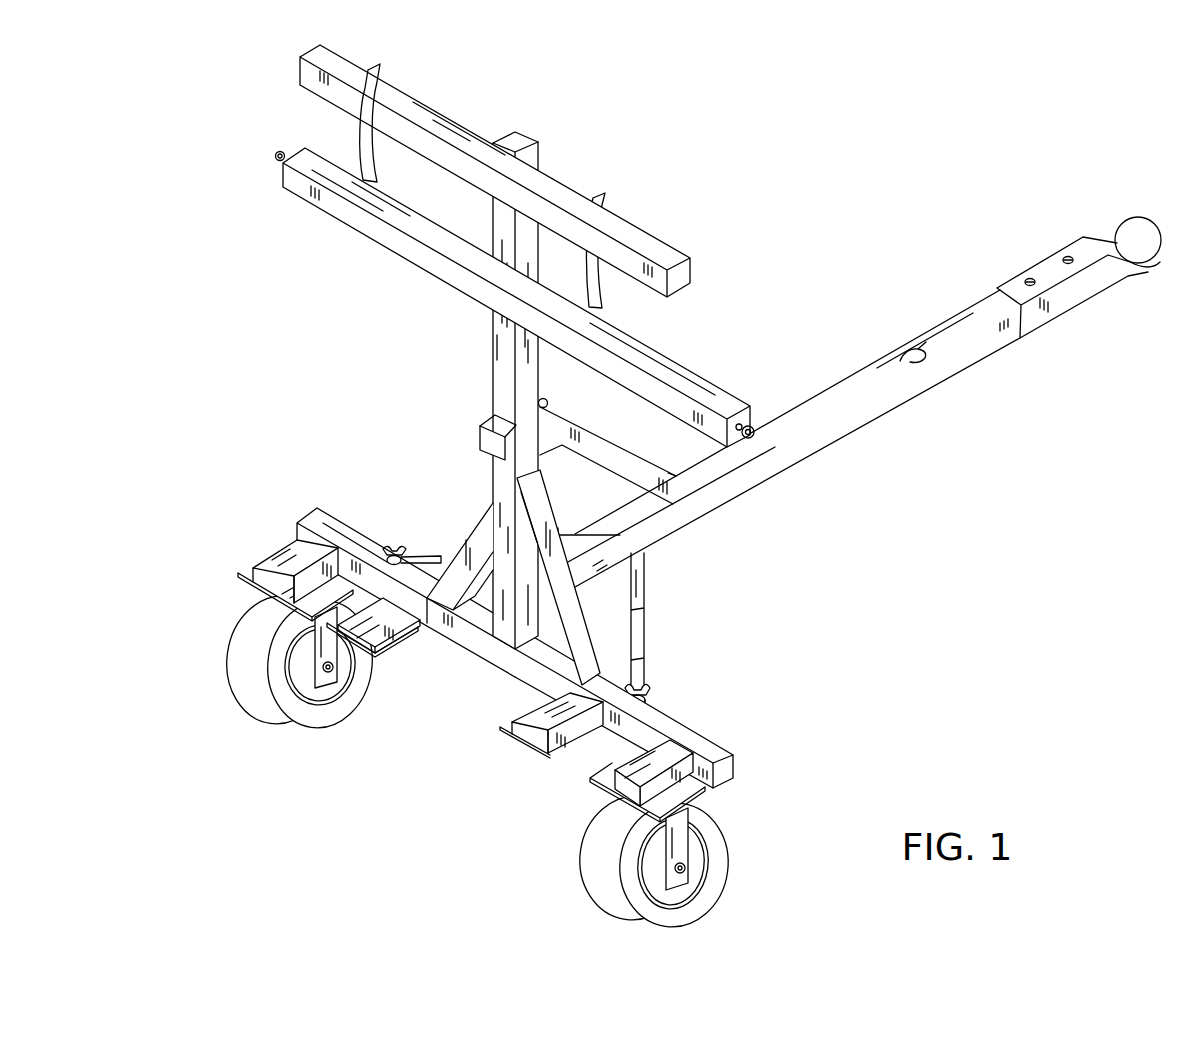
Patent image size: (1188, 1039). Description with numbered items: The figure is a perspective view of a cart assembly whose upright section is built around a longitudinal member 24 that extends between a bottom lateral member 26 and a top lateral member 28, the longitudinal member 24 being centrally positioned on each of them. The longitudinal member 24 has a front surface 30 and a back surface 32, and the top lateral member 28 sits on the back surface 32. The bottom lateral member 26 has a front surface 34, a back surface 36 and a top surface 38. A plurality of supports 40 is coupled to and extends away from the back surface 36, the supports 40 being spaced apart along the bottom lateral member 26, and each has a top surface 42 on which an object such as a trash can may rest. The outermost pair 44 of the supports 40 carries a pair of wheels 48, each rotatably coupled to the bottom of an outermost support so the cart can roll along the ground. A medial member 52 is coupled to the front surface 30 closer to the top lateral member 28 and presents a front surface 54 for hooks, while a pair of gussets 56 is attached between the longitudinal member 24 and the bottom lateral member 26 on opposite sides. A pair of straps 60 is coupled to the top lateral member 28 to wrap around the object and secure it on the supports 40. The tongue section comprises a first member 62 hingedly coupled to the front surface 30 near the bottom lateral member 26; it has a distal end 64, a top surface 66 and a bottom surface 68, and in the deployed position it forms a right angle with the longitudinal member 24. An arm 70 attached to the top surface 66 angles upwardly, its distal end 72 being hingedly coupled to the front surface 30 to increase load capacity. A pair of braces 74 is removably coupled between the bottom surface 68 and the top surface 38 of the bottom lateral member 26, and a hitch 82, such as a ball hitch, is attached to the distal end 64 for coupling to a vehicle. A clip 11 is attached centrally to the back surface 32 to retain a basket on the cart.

The clip 11 is at (480, 438).
The longitudinal member 24 is at (476, 359).
The bottom lateral member 26 is at (720, 735).
The top lateral member 28 is at (583, 193).
The front surface 30 is at (540, 150).
The back surface 32 is at (500, 343).
The front surface 34 is at (737, 763).
The back surface 36 is at (532, 668).
The top surface 38 is at (667, 720).
The supports 40 is at (352, 600).
The top surface 42 is at (540, 717).
The outermost pair of supports 44 is at (240, 574).
The wheels 48 is at (318, 712).
The medial member 52 is at (707, 380).
The front surface 54 is at (752, 420).
The gussets 56 is at (535, 520).
The straps 60 is at (364, 136).
The first member 62 is at (863, 373).
The distal end 64 is at (973, 303).
The top surface 66 is at (912, 356).
The bottom surface 68 is at (900, 393).
The arm 70 is at (668, 473).
The distal end 72 is at (545, 440).
The braces 74 is at (566, 533).
The hitch 82 is at (1087, 237).